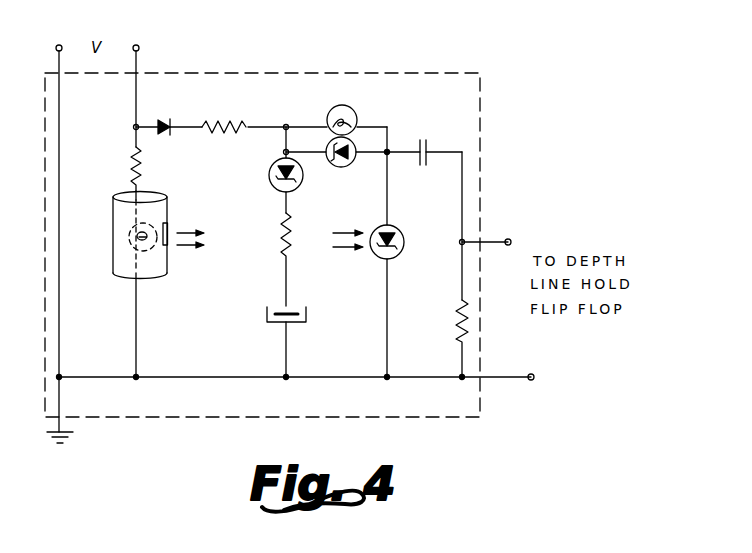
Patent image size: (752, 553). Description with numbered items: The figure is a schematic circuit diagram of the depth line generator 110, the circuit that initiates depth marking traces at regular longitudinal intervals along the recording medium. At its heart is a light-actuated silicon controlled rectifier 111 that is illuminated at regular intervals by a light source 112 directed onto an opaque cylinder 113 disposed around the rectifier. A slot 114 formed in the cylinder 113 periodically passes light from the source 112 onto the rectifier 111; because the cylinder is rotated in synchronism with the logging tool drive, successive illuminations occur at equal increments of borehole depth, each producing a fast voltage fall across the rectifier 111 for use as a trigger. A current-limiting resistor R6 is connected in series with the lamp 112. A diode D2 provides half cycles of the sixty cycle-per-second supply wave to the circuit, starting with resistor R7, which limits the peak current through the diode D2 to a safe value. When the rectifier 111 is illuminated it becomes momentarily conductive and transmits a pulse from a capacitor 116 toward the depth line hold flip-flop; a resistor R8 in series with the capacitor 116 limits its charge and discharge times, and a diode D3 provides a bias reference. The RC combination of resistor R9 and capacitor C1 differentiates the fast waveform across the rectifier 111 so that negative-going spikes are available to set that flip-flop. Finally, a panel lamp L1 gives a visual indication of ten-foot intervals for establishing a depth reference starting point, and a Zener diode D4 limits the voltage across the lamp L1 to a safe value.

The depth line generator 110 is at (410, 73).
The light-actuated silicon controlled rectifier 111 is at (377, 260).
The light source 112 is at (147, 251).
The opaque cylinder 113 is at (170, 262).
The slot 114 is at (168, 228).
The capacitor 116 is at (292, 322).
The current-limiting resistor R6 is at (145, 160).
The resistor R7 is at (236, 92).
The resistor R8 is at (280, 256).
The resistor R9 is at (452, 306).
The diode D2 is at (162, 122).
The diode D3 is at (298, 188).
The Zener diode D4 is at (345, 167).
The panel lamp L1 is at (353, 110).
The capacitor C1 is at (425, 150).